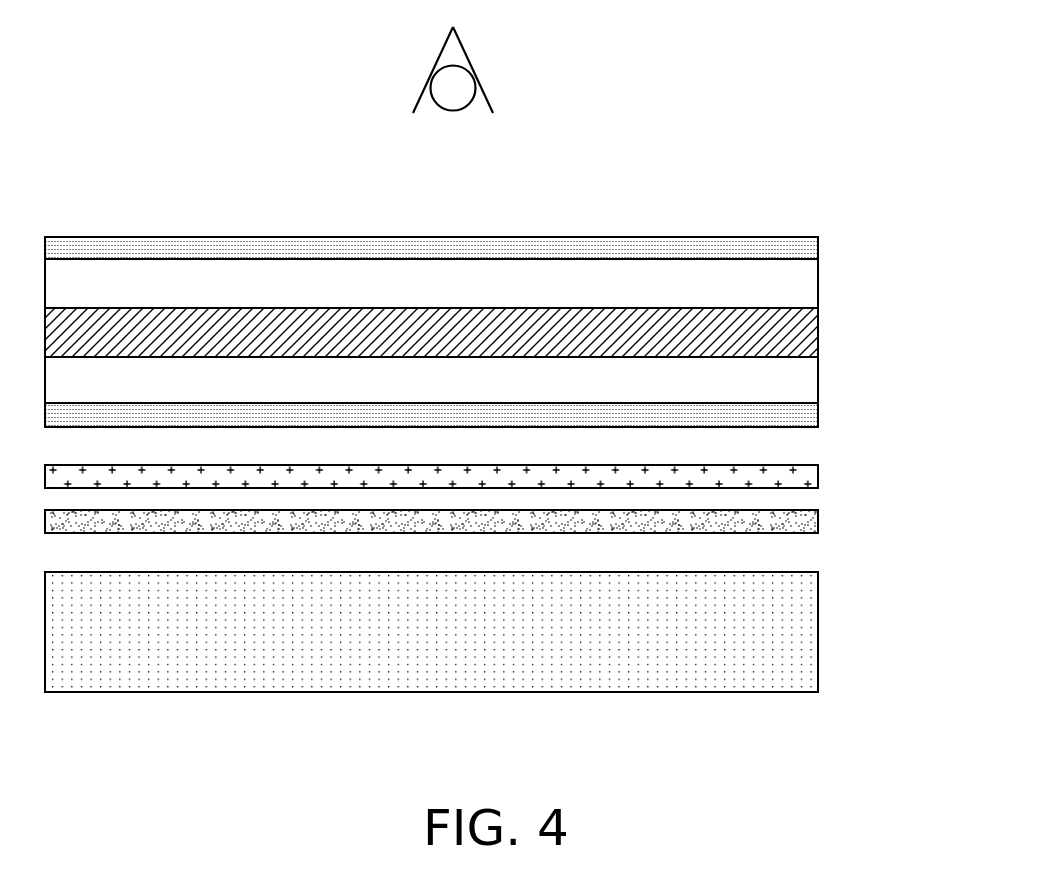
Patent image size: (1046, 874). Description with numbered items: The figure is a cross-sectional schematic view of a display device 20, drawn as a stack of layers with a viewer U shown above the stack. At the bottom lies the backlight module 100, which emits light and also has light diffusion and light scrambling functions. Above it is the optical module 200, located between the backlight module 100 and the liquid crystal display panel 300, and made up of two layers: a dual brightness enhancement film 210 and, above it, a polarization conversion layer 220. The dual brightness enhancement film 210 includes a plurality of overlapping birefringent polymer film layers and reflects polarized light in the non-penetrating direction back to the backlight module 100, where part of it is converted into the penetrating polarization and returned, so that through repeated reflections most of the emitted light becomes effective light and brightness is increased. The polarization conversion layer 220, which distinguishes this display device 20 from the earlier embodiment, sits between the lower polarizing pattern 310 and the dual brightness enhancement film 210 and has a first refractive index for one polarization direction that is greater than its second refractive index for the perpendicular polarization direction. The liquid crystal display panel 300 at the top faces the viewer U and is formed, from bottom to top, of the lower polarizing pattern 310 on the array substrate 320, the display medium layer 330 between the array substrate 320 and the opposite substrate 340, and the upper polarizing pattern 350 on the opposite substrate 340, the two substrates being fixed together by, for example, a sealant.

The viewer U is at (468, 55).
The display device 20 is at (509, 497).
The backlight module 100 is at (815, 642).
The optical module 200 is at (508, 501).
The dual brightness enhancement film 210 is at (815, 524).
The polarization conversion layer 220 is at (815, 478).
The liquid crystal display panel 300 is at (509, 332).
The lower polarizing pattern 310 is at (474, 415).
The array substrate 320 is at (815, 378).
The display medium layer 330 is at (815, 330).
The opposite substrate 340 is at (815, 284).
The upper polarizing pattern 350 is at (815, 249).